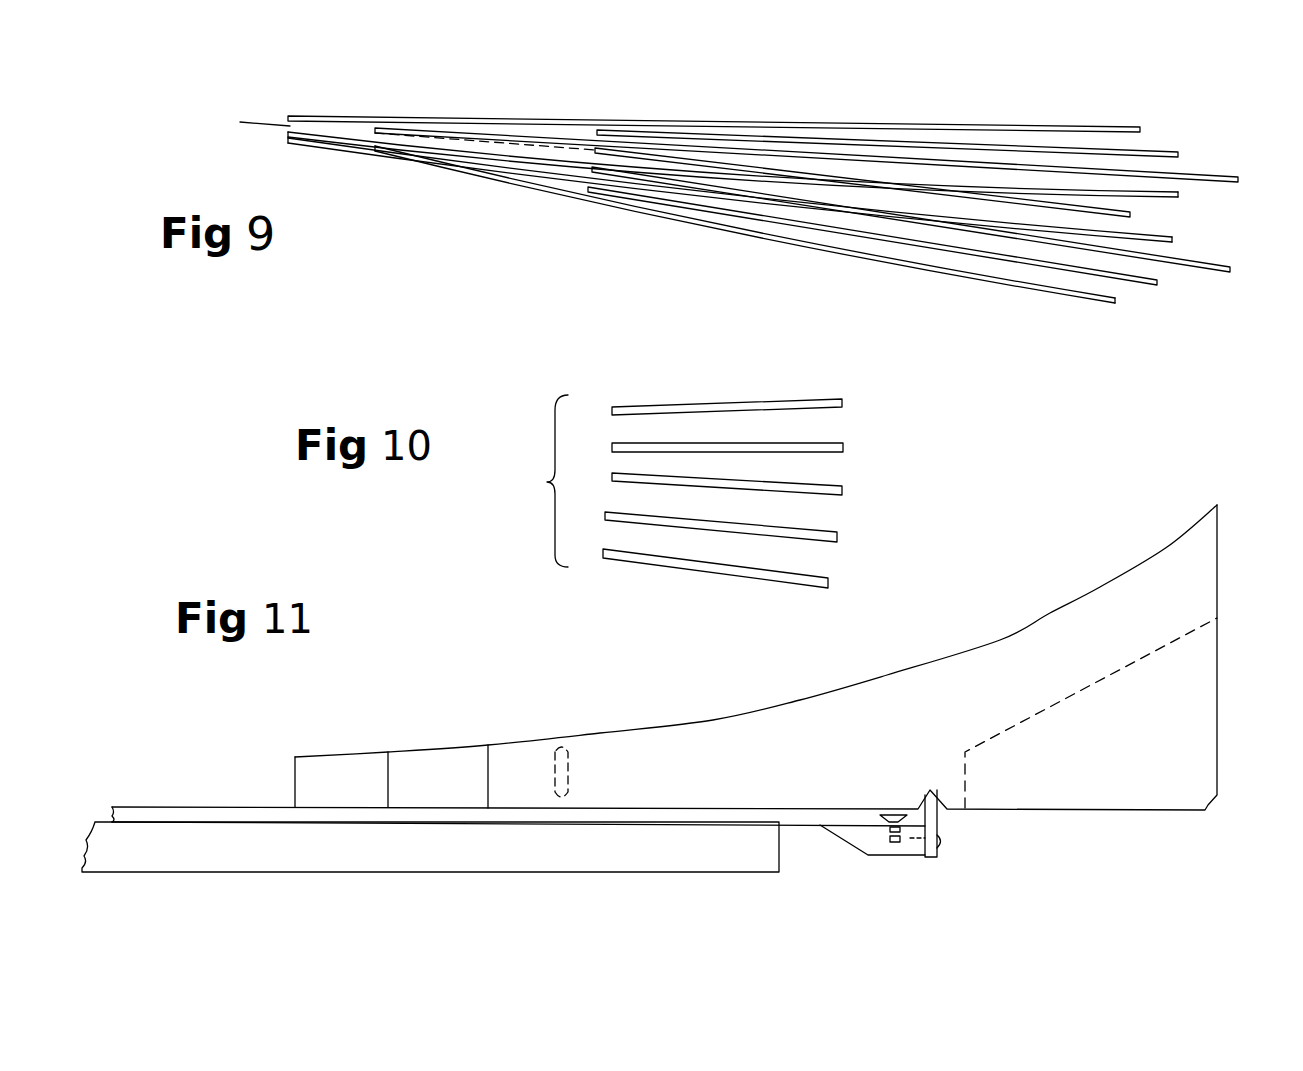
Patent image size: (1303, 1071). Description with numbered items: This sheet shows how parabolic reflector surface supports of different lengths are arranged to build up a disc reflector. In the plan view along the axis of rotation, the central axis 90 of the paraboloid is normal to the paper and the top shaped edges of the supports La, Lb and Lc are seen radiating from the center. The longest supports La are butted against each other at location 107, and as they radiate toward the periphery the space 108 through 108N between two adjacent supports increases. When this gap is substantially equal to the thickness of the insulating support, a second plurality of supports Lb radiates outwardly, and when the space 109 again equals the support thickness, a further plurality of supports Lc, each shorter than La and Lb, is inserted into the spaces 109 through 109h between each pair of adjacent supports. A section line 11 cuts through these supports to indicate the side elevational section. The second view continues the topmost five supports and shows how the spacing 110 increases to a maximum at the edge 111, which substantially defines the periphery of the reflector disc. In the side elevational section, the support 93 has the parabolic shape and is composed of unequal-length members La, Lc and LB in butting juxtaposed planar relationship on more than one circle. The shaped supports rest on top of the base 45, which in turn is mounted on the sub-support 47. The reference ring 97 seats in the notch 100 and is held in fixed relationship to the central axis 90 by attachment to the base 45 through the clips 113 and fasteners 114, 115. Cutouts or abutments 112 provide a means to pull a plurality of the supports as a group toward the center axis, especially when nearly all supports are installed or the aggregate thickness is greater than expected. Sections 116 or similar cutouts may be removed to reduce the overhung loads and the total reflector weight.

In FIG. 9, the section line 11- 11 is at (240, 122).
In FIG. 9, the central axis 90-90' 90 is at (176, 114).
In FIG. 11, the central axis 90-90' 90 is at (169, 760).
In FIG. 9, the butted joint of longest supports 107 is at (288, 143).
In FIG. 9, the space between adjacent supports 108 is at (370, 127).
In FIG. 9, the space between adjacent supports 108N is at (377, 152).
In FIG. 9, the space between adjacent supports 109 is at (584, 134).
In FIG. 9, the space between adjacent supports 109h is at (575, 187).
In FIG. 10, the spacing 110 is at (822, 420).
In FIG. 10, the edge 111 is at (825, 592).
In FIG. 11, the edge 111 is at (1220, 560).
In FIG. 11, the cutouts or abutments 112 is at (560, 745).
In FIG. 11, the clips 113 is at (862, 836).
In FIG. 11, the fastener 114 is at (893, 815).
In FIG. 11, the fastener 115 is at (945, 836).
In FIG. 11, the sections or cutouts 116 is at (1205, 705).
In FIG. 11, the base 45 is at (650, 818).
In FIG. 11, the sub-support 47 is at (578, 838).
In FIG. 11, the support 93 is at (974, 660).
In FIG. 11, the reference ring 97 is at (935, 817).
In FIG. 11, the notch 100 is at (946, 808).
In FIG. 9, the longest shaped support La is at (323, 118).
In FIG. 10, the longest shaped support La is at (852, 403).
In FIG. 11, the longest shaped support La is at (347, 765).
In FIG. 9, the second plurality of supports Lb is at (412, 127).
In FIG. 10, the second plurality of supports Lb is at (852, 492).
In FIG. 9, the shorter supports Lc is at (612, 134).
In FIG. 10, the shorter supports Lc is at (853, 448).
In FIG. 11, the shorter supports Lc is at (435, 765).
In FIG. 11, the shaped support LB is at (716, 724).